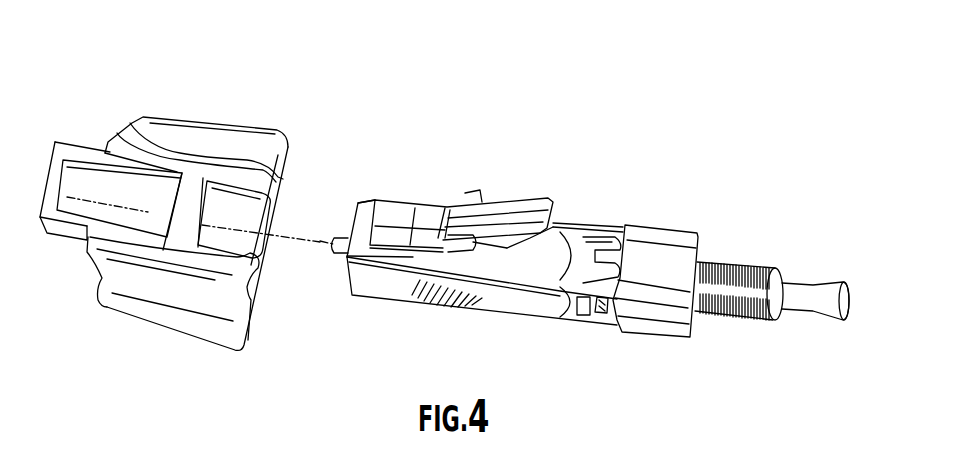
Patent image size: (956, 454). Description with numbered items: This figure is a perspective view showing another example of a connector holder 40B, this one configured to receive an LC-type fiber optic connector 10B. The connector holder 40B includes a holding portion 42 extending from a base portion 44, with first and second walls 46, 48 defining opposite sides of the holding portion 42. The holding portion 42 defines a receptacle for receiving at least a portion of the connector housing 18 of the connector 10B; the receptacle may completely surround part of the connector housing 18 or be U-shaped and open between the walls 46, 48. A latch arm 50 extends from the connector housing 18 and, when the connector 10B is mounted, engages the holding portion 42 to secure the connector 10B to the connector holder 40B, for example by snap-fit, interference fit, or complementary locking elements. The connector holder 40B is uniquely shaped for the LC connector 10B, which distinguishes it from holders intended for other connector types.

The connector holder 40B is at (153, 98).
The holding portion 42 is at (68, 142).
The base portion 44 is at (213, 127).
The first wall 46 is at (127, 267).
The second wall 48 is at (228, 153).
The LC connector 10B is at (611, 195).
The connector housing 18 is at (542, 262).
The latch arm 50 is at (515, 197).